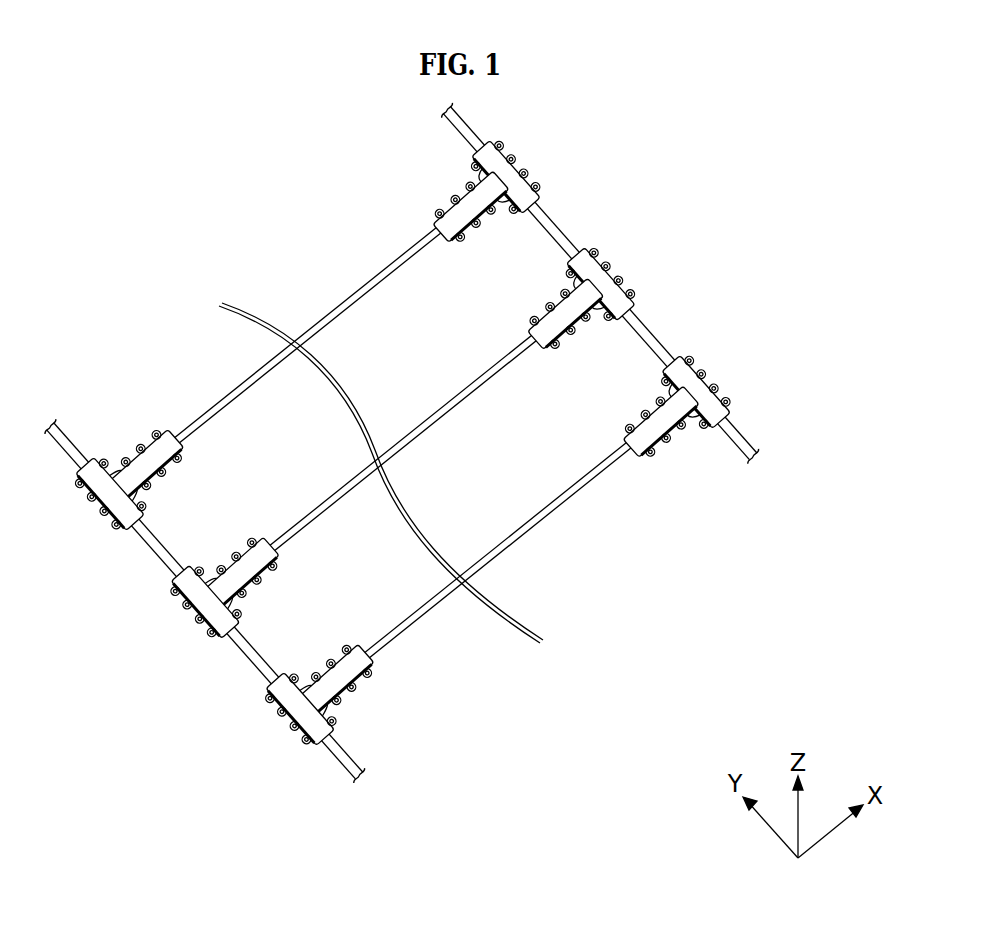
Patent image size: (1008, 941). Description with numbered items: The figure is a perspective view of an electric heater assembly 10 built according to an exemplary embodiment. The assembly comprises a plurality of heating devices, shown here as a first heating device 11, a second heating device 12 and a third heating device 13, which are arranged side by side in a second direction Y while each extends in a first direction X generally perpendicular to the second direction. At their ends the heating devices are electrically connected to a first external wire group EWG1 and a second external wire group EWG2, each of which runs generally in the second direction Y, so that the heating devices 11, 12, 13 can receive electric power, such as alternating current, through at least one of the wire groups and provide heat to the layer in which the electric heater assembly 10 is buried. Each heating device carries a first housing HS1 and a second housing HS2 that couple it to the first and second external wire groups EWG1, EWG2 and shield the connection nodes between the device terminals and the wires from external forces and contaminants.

The electric heater assembly 10 is at (665, 166).
The first heating device 11 is at (214, 404).
The second heating device 12 is at (308, 512).
The third heating device 13 is at (407, 617).
The first housing HS1 is at (110, 500).
The second housing HS2 is at (510, 178).
The first external wire group EWG1 is at (160, 557).
The second external wire group EWG2 is at (553, 229).